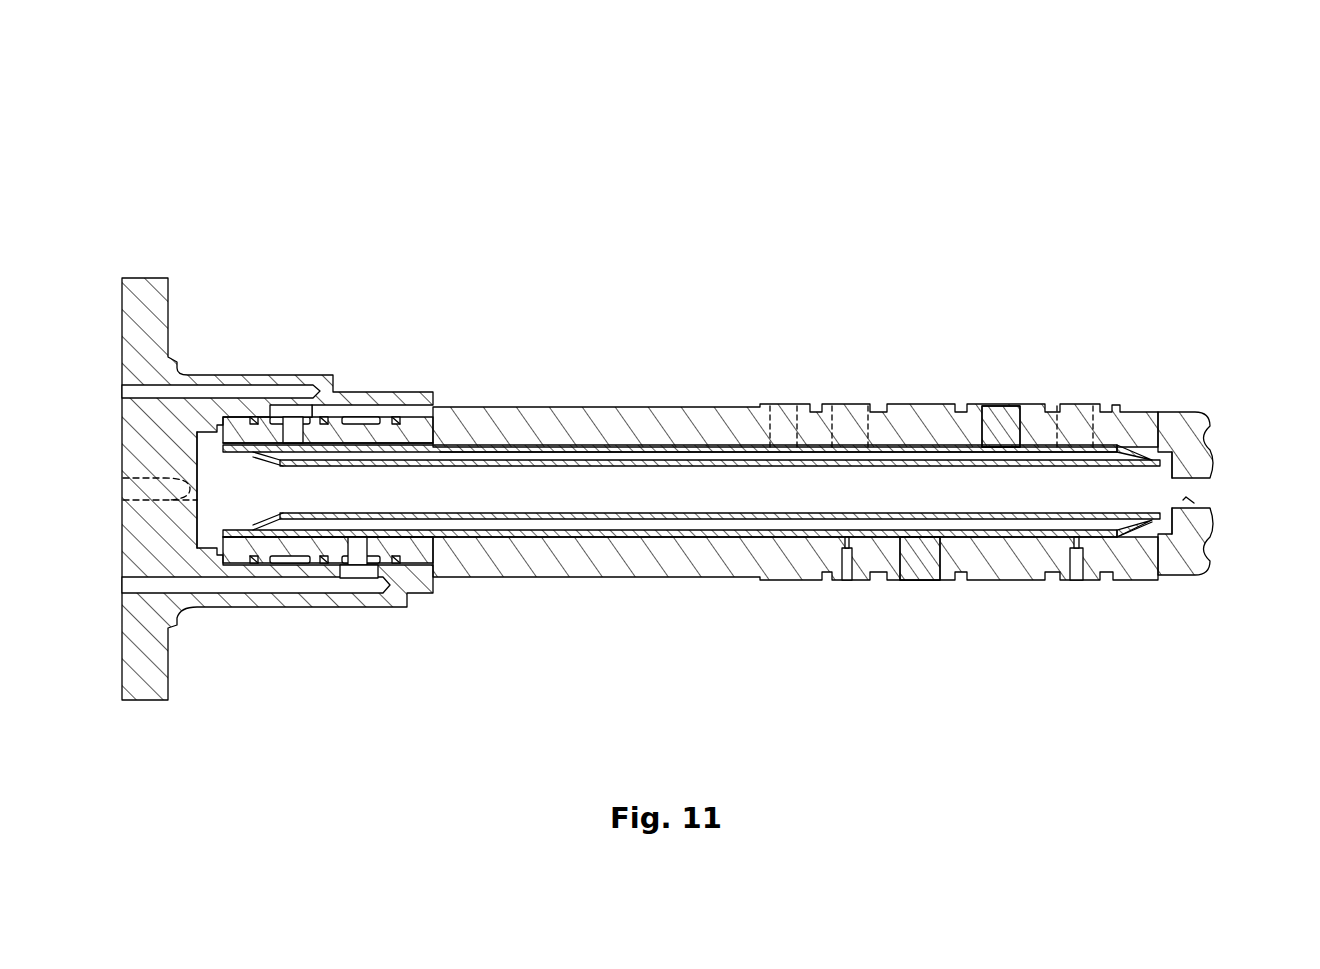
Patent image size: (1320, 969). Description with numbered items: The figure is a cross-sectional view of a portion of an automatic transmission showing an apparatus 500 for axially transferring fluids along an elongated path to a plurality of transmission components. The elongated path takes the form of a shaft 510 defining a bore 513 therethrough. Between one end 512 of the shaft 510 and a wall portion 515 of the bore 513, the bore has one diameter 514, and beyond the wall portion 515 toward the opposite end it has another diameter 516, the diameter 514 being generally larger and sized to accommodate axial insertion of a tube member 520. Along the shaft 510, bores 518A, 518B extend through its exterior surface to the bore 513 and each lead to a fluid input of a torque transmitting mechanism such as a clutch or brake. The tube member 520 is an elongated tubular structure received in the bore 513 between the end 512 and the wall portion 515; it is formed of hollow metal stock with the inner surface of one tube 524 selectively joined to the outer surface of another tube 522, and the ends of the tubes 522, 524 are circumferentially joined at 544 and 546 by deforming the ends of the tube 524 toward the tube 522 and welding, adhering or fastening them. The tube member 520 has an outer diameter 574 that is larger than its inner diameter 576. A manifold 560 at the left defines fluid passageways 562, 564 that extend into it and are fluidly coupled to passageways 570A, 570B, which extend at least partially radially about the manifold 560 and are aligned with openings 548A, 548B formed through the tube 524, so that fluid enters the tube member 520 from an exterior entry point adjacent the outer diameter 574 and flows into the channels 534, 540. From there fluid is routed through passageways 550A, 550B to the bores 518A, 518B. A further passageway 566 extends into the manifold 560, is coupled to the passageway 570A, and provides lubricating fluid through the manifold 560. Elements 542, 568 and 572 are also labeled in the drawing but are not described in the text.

The apparatus 500 is at (663, 413).
The shaft 510 is at (874, 483).
The end of the shaft 512 is at (232, 548).
The bore 513 is at (1205, 530).
The diameter 514 is at (1148, 452).
The wall portion 515 is at (1173, 412).
The diameter 516 is at (1195, 503).
The bore 518A is at (1005, 410).
The bore 518B is at (925, 570).
The tube member 520 is at (691, 471).
The tube 522 is at (568, 462).
The tube 524 is at (470, 447).
The channel 534 is at (752, 455).
The channel 540 is at (728, 532).
The lower tube wall 542 is at (680, 507).
The joint 544 is at (1147, 532).
The joint 546 is at (340, 513).
The opening 548A is at (292, 450).
The opening 548B is at (385, 545).
The fluid passageway 550A is at (1003, 457).
The fluid passageway 550B is at (912, 537).
The manifold 560 is at (222, 489).
The fluid passageway 562 is at (130, 395).
The fluid passageway 564 is at (133, 586).
The fluid passageway 566 is at (128, 490).
The washer pocket 568 is at (290, 562).
The fluid passageway 570A is at (287, 432).
The fluid passageway 570B is at (367, 530).
The seal 572 is at (252, 567).
The outer diameter 574 is at (650, 452).
The inner diameter 576 is at (565, 513).